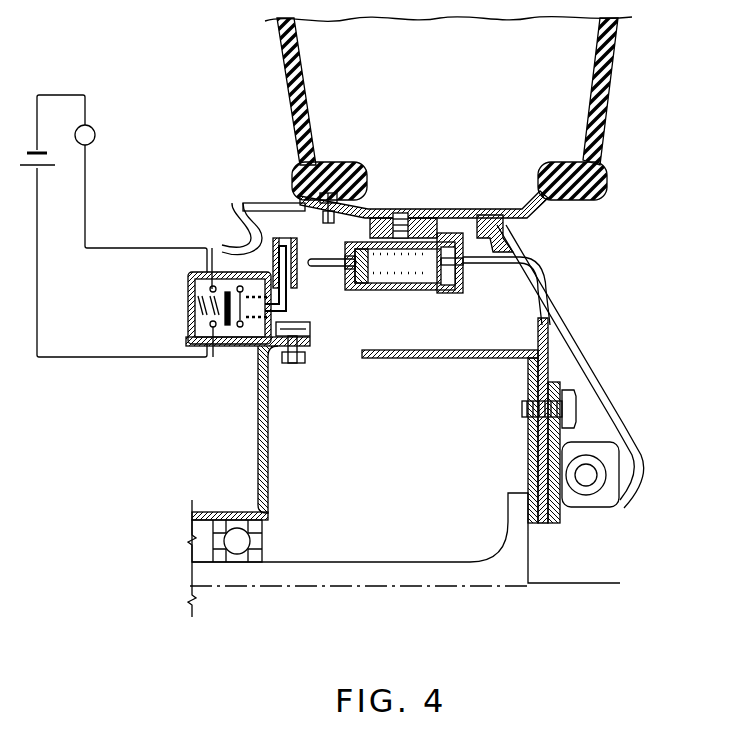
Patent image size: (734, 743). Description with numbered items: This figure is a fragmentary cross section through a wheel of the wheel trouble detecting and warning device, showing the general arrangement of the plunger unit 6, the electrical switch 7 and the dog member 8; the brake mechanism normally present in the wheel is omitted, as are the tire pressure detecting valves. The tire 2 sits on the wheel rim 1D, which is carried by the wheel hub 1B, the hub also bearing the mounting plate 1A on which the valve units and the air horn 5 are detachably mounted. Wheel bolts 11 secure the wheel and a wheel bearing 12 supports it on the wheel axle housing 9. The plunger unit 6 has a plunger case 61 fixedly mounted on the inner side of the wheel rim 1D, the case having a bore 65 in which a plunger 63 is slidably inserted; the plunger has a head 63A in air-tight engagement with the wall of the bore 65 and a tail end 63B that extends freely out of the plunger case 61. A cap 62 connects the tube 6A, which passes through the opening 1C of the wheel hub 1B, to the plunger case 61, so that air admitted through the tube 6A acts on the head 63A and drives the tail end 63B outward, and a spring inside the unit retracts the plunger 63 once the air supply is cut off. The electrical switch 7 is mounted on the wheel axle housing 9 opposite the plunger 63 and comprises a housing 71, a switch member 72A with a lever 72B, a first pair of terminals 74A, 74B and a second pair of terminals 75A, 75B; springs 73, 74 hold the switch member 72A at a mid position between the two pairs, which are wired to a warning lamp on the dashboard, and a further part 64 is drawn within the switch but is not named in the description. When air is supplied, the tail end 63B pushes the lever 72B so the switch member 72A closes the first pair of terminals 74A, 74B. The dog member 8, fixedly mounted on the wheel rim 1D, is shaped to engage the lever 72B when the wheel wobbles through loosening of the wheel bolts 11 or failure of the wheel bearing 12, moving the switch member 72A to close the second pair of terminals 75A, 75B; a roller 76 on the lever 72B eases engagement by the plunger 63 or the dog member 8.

The tire 2 is at (612, 68).
The mounting plate 1A is at (557, 383).
The wheel hub 1B is at (550, 352).
The opening 1C is at (532, 293).
The wheel rim 1D is at (430, 209).
The air horn 5 is at (617, 505).
The plunger unit 6 is at (400, 285).
The tube 6A is at (562, 310).
The plunger case 61 is at (388, 288).
The cap 62 is at (460, 291).
The plunger 63 is at (319, 267).
The head 63A is at (448, 291).
The tail end 63B is at (321, 260).
The piston 64 is at (362, 286).
The bore 65 is at (410, 292).
The electrical switch 7 is at (145, 242).
The housing 71 is at (192, 318).
The switch member 72A is at (212, 268).
The lever 72B is at (283, 242).
The spring 73 is at (192, 301).
The spring 74 is at (246, 345).
The first terminal 74A is at (205, 345).
The first terminal 74B is at (192, 284).
The second terminal 75A is at (223, 345).
The second terminal 75B is at (228, 270).
The roller 76 is at (290, 237).
The dog member 8 is at (247, 203).
The wheel axle housing 9 is at (258, 463).
The wheel bolts 11 is at (575, 409).
The wheel bearing 12 is at (213, 527).